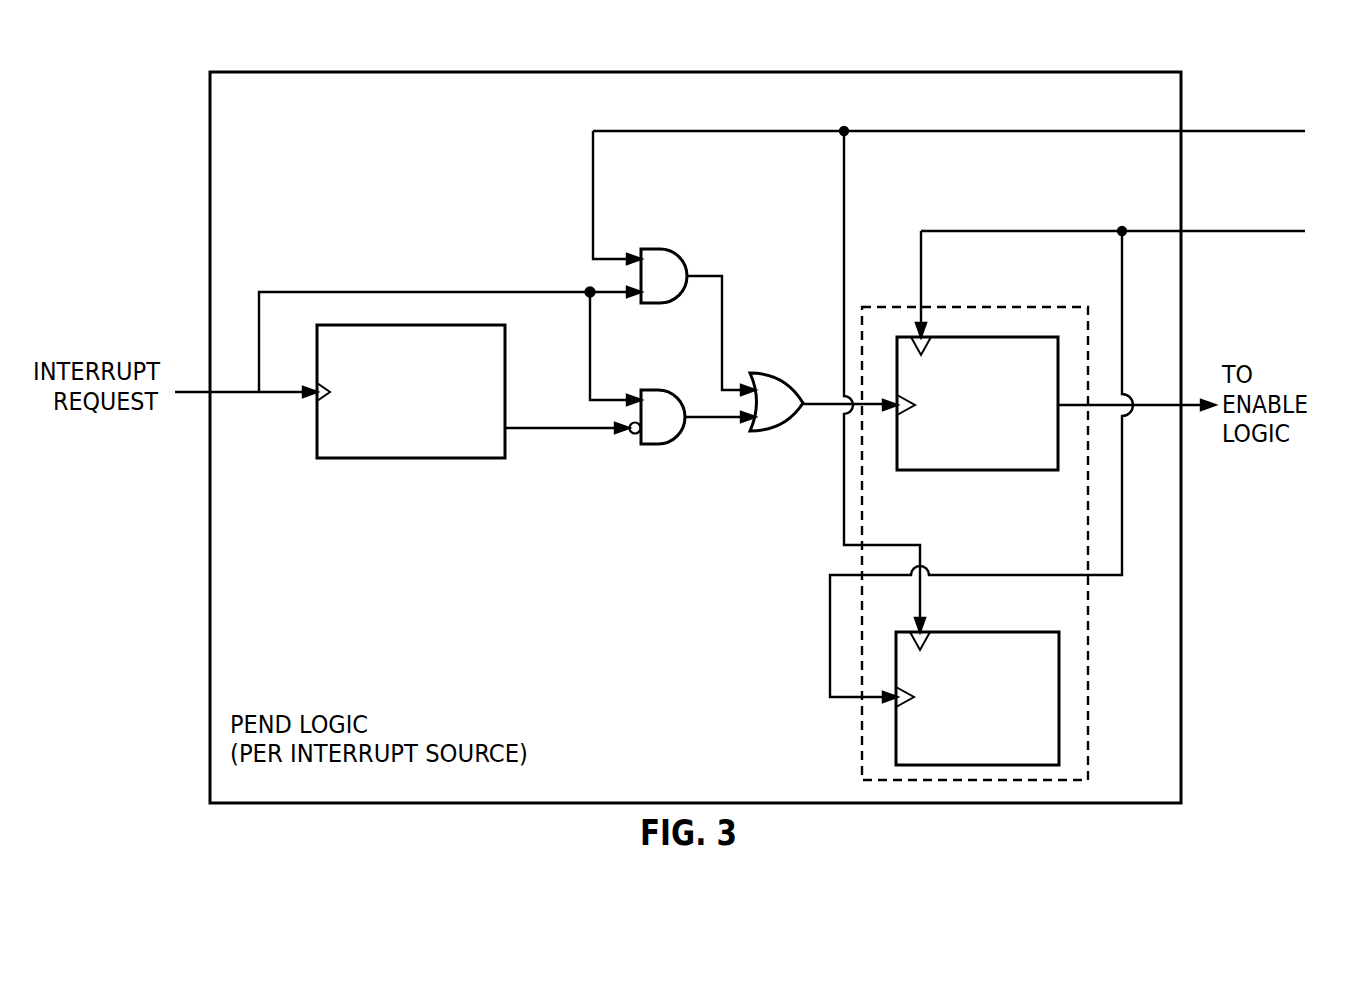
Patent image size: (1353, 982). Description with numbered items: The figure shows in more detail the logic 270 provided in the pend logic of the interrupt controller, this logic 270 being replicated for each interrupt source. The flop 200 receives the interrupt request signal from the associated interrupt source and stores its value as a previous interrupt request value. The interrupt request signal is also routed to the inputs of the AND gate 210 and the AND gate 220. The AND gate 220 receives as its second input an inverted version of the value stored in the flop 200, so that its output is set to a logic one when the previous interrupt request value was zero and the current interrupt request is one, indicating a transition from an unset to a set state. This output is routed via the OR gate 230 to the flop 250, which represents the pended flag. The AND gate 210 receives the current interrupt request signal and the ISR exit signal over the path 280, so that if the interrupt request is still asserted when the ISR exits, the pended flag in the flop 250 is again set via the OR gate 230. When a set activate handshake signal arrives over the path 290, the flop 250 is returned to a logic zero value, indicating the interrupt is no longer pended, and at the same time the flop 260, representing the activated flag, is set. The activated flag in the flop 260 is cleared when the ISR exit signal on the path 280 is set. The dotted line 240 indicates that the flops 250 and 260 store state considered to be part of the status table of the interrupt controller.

The flop 200 is at (397, 459).
The AND gate 210 is at (688, 235).
The AND gate 220 is at (662, 445).
The OR gate 230 is at (772, 432).
The dotted line 240 is at (1088, 670).
The flop 250 is at (978, 470).
The flop 260 is at (975, 632).
The logic 270 is at (818, 72).
The path 280 is at (1245, 132).
The path 290 is at (1232, 232).